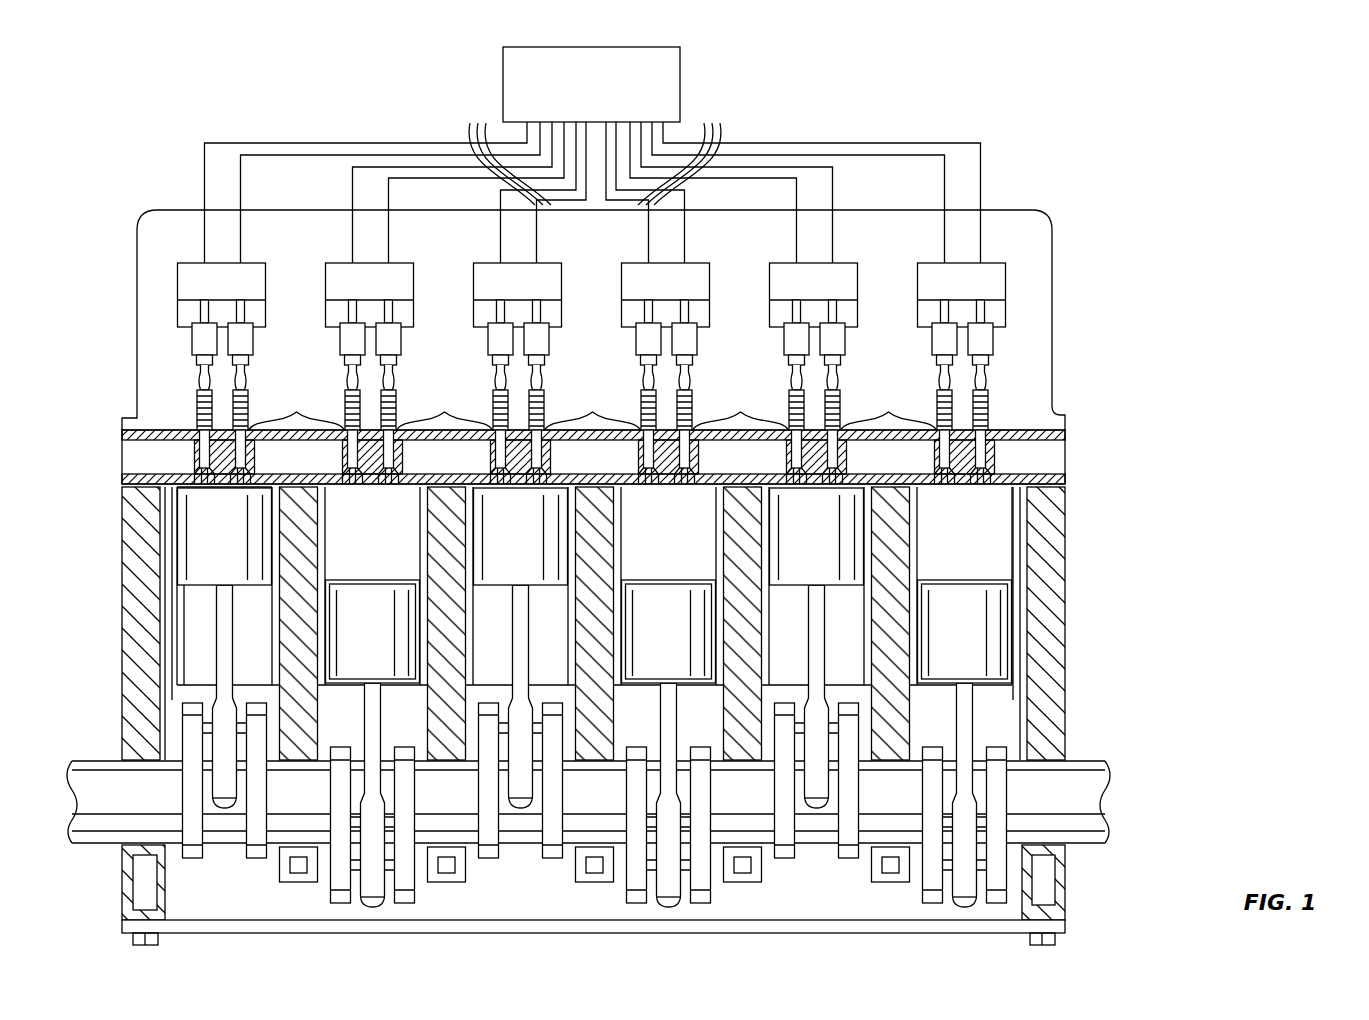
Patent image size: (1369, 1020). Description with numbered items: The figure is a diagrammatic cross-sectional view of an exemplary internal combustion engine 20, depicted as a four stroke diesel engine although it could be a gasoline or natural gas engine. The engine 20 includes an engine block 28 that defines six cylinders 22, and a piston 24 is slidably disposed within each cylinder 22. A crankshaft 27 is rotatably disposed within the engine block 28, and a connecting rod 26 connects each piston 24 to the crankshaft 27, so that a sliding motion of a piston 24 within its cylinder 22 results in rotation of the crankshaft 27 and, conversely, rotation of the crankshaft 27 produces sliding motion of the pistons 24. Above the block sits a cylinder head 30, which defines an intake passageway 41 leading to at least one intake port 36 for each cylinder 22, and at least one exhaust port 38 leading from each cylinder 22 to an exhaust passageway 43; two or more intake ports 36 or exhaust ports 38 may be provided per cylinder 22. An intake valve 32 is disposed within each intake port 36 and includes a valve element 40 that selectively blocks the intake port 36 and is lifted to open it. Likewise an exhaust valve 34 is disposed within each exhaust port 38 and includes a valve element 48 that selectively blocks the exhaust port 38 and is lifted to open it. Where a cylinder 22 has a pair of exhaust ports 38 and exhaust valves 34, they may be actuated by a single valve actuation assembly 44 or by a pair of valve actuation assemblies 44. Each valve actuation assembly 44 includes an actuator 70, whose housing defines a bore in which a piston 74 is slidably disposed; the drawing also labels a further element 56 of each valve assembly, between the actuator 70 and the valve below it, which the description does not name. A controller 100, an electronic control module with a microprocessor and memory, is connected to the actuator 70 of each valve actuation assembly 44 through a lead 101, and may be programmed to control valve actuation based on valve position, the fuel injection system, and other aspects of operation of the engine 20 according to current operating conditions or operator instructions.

The internal combustion engine 20 is at (1131, 206).
The cylinder 22 is at (237, 654).
The piston 24 is at (208, 575).
The connecting rod 26 is at (216, 672).
The crankshaft 27 is at (108, 812).
The engine block 28 is at (130, 502).
The cylinder head 30 is at (1065, 458).
The intake valve 32 is at (593, 405).
The exhaust valve 34 is at (1028, 400).
The intake port 36 is at (262, 497).
The exhaust port 38 is at (265, 488).
The valve element 40 is at (182, 503).
The intake passageway 41 is at (284, 469).
The exhaust passageway 43 is at (432, 469).
The valve actuation assembly 44 is at (239, 343).
The valve element 48 is at (197, 477).
The valve stem 56 is at (246, 380).
The actuator 70 is at (255, 263).
The piston 74 is at (204, 311).
The controller 100 is at (612, 96).
The lead 101 is at (378, 170).